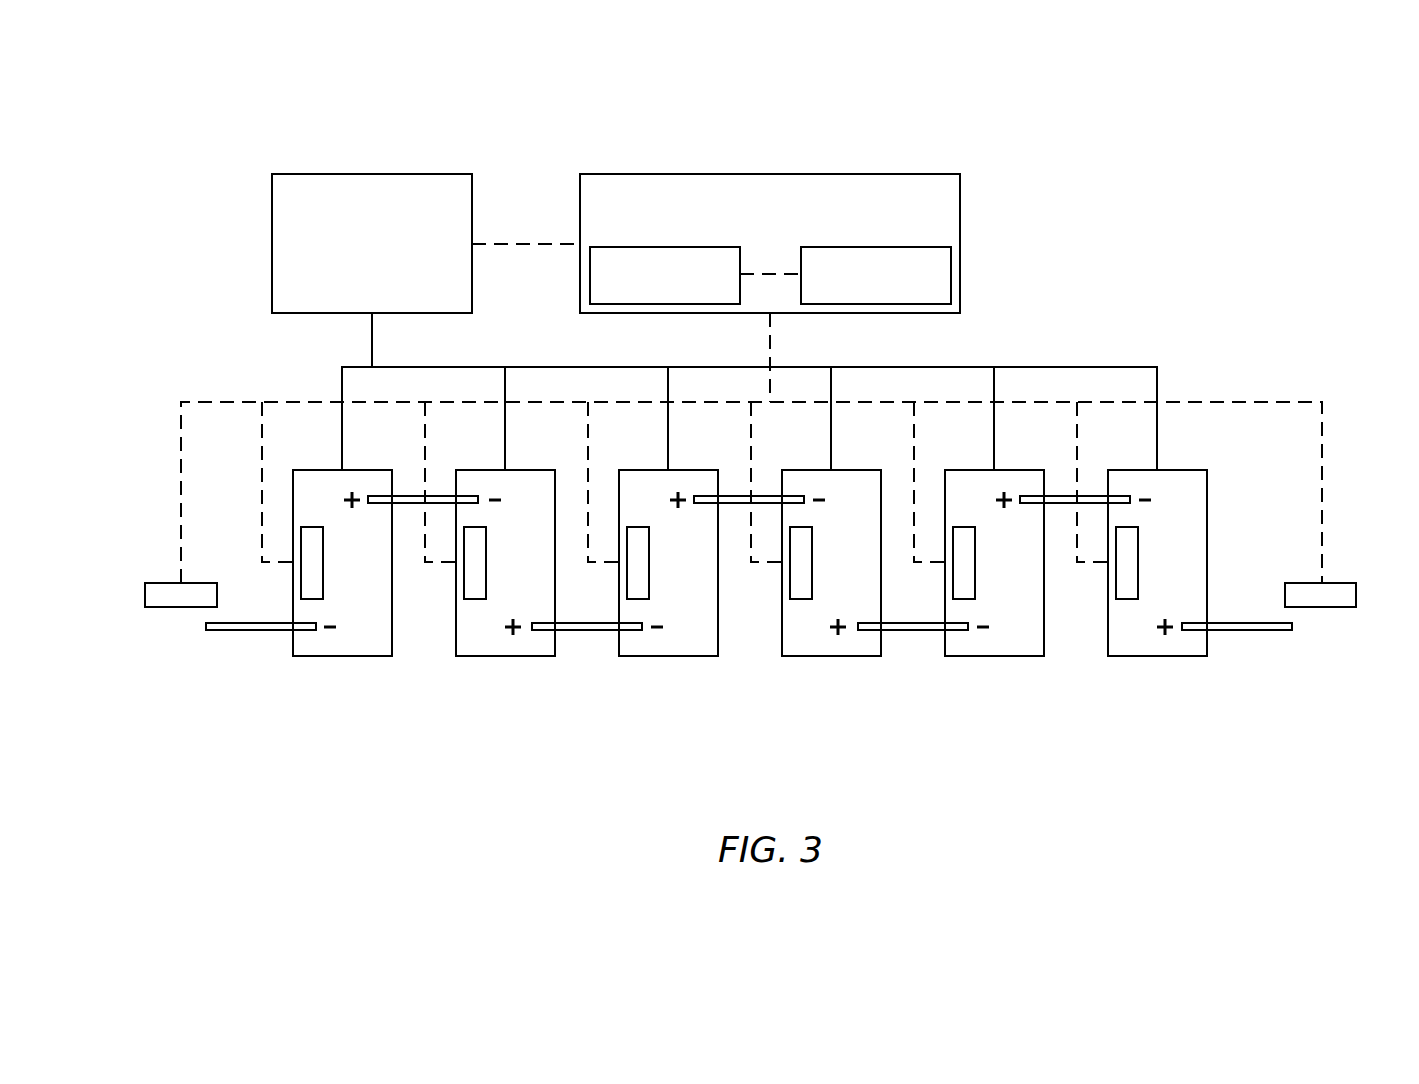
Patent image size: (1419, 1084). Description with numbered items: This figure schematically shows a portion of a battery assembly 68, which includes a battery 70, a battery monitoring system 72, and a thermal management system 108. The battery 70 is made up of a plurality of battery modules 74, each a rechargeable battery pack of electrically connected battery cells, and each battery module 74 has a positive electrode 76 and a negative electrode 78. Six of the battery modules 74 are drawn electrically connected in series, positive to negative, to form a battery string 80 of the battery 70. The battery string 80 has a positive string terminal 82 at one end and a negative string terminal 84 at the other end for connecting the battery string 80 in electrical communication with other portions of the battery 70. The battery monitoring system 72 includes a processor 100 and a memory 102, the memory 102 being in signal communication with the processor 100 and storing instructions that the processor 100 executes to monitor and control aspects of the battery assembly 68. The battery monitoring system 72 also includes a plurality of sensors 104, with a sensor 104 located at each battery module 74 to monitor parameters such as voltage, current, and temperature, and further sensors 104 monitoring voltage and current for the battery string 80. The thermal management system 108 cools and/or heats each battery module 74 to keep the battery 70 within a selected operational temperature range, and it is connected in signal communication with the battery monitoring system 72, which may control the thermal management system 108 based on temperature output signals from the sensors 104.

The battery assembly 68 is at (1087, 208).
The battery 70 is at (1148, 757).
The battery monitoring system 72 is at (960, 209).
The battery module 74 is at (782, 599).
The positive electrode 76 is at (730, 521).
The negative electrode 78 is at (737, 607).
The battery string 80 is at (423, 693).
The positive string terminal 82 is at (1283, 640).
The negative string terminal 84 is at (220, 645).
The processor 100 is at (590, 274).
The memory 102 is at (951, 274).
The sensor 104 is at (751, 505).
The thermal management system 108 is at (272, 208).